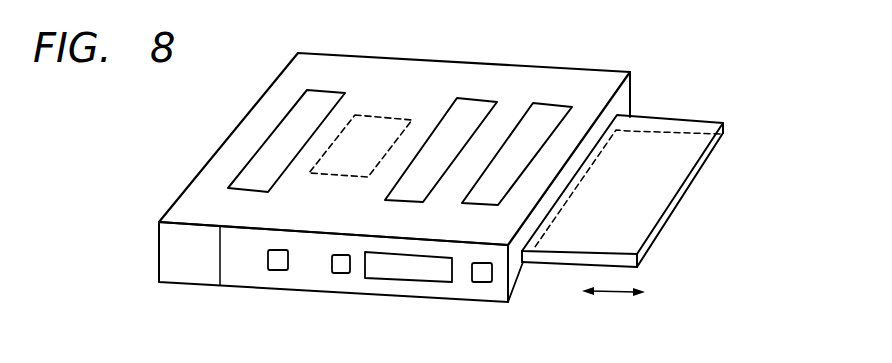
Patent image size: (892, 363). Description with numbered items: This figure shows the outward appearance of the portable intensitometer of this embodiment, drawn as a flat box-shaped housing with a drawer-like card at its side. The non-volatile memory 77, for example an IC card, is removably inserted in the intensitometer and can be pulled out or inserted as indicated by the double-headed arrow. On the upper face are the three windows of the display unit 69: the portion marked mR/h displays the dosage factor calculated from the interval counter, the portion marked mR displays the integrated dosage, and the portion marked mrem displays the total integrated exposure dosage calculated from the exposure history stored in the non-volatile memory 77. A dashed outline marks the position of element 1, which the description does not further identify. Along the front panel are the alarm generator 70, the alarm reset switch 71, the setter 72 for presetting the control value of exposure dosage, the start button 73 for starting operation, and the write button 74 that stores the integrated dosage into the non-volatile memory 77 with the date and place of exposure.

The radiation detector 1 is at (335, 170).
The display unit 69 is at (567, 107).
The alarm generator 70 is at (205, 278).
The alarm reset switch 71 is at (278, 270).
The setter 72 is at (408, 280).
The start button 73 is at (481, 282).
The write button 74 is at (339, 275).
The non-volatile memory 77 is at (680, 122).